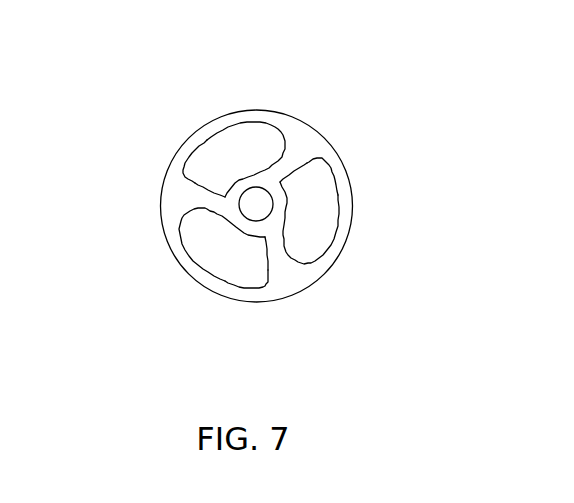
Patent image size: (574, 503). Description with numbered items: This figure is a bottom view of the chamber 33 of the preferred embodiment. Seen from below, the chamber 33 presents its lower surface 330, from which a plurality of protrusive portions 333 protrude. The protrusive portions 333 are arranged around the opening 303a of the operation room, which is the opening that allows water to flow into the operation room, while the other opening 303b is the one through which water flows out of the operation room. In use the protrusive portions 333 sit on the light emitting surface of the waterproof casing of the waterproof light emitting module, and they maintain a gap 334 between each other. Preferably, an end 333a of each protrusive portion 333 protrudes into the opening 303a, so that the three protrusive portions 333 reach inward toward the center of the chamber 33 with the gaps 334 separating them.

The chamber 33 is at (328, 142).
The lower surface 330 is at (168, 232).
The protrusive portion 333 is at (227, 135).
The end of protrusive portion 333a is at (288, 172).
The gap 334 is at (283, 165).
The opening 303a is at (280, 268).
The opening 303b is at (255, 200).